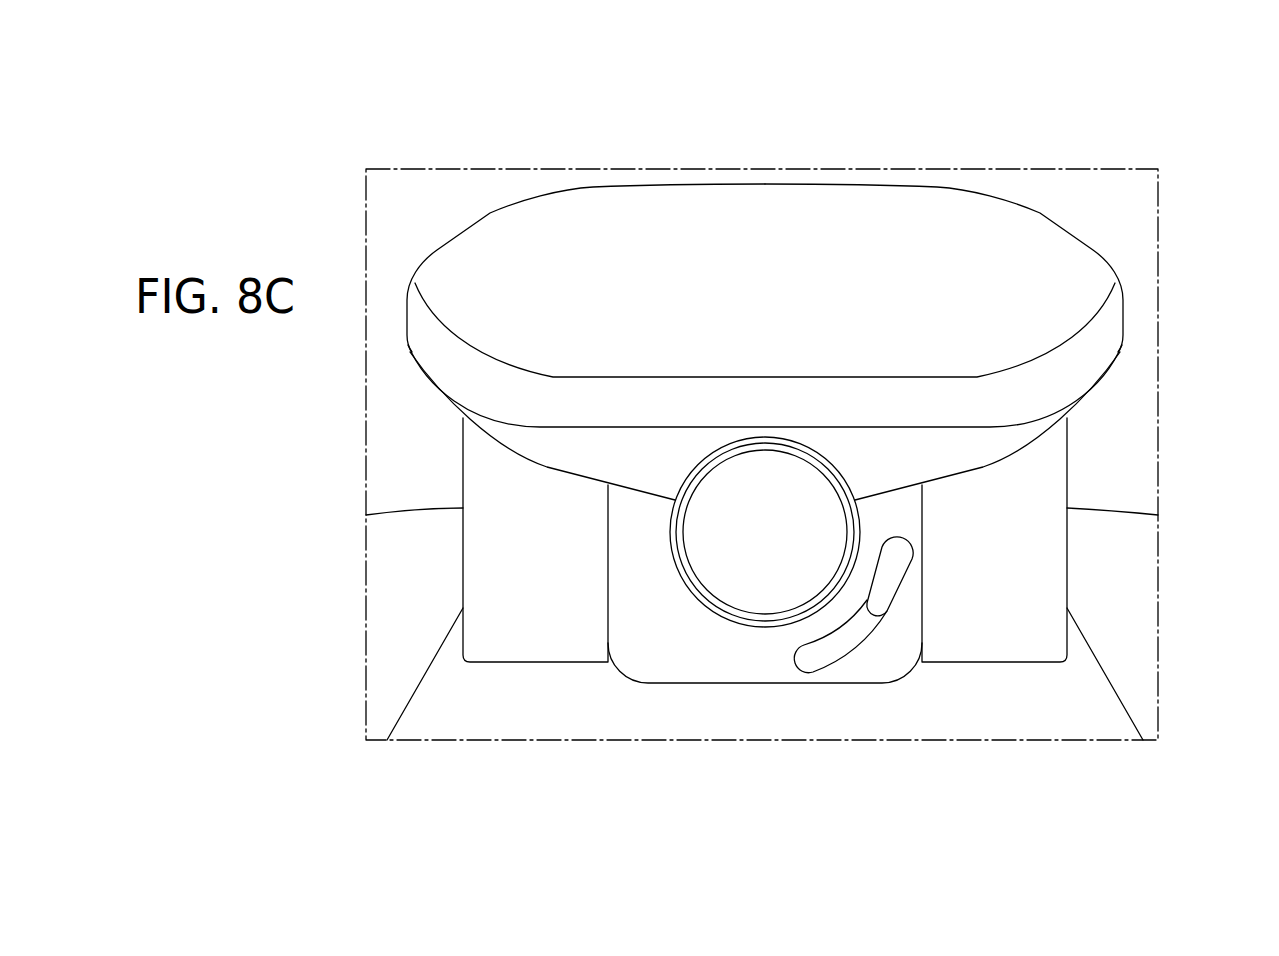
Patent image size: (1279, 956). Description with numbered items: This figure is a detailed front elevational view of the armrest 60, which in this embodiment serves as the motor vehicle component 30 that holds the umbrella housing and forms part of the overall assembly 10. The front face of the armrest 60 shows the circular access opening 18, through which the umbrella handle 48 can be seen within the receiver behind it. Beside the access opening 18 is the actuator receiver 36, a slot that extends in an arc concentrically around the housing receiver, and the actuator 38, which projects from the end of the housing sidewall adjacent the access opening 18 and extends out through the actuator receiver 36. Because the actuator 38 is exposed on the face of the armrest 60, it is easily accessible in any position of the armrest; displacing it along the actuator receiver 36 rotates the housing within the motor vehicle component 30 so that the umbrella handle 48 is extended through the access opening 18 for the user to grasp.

The electronic device 10 is at (1092, 135).
The armrest 60 is at (705, 218).
The motor vehicle component 30 is at (1108, 396).
The access opening 18 is at (710, 610).
The umbrella handle 48 is at (765, 570).
The actuator receiver 36 is at (818, 655).
The actuator 38 is at (887, 588).